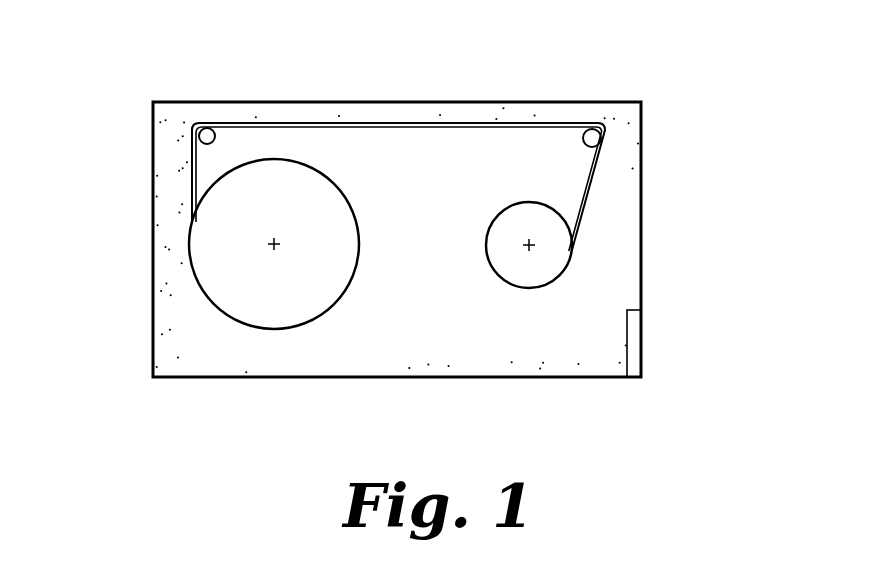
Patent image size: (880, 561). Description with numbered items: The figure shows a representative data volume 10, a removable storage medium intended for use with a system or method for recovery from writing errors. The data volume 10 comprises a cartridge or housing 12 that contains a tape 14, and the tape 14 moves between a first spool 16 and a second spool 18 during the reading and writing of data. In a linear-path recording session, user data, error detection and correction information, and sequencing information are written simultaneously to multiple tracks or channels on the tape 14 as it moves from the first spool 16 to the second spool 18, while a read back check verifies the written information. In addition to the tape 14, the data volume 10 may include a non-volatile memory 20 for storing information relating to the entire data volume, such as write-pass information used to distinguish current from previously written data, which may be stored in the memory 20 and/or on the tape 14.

The data volume 10 is at (397, 229).
The cartridge or housing 12 is at (222, 378).
The tape 14 is at (467, 124).
The first spool 16 is at (210, 274).
The second spool 18 is at (556, 260).
The non-volatile memory 20 is at (633, 333).